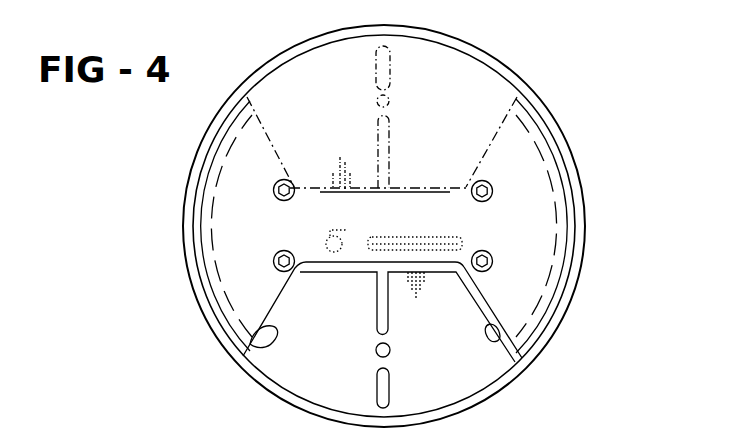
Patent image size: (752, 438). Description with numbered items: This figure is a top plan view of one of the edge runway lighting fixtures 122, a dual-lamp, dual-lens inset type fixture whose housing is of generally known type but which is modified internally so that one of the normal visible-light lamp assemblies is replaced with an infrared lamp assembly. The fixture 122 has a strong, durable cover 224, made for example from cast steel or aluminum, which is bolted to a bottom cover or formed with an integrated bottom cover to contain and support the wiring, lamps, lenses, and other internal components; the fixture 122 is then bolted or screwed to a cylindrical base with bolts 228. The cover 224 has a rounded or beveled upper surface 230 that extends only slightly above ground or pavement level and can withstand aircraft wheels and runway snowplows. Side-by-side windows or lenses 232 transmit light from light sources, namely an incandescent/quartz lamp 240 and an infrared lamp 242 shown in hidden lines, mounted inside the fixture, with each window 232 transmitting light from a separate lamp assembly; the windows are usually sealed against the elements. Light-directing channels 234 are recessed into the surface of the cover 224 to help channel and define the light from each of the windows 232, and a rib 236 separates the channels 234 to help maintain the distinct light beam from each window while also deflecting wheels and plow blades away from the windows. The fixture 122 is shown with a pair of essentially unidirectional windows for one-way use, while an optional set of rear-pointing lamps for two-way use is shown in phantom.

The edge runway lighting fixture 122 is at (522, 82).
The cover 224 is at (576, 264).
The bolts 228 is at (492, 194).
The upper surface 230 is at (402, 220).
The windows 232 is at (333, 272).
The light-directing channels 234 is at (250, 344).
The rib 236 is at (385, 323).
The incandescent/quartz lamp 240 is at (323, 232).
The infrared lamp 242 is at (447, 237).